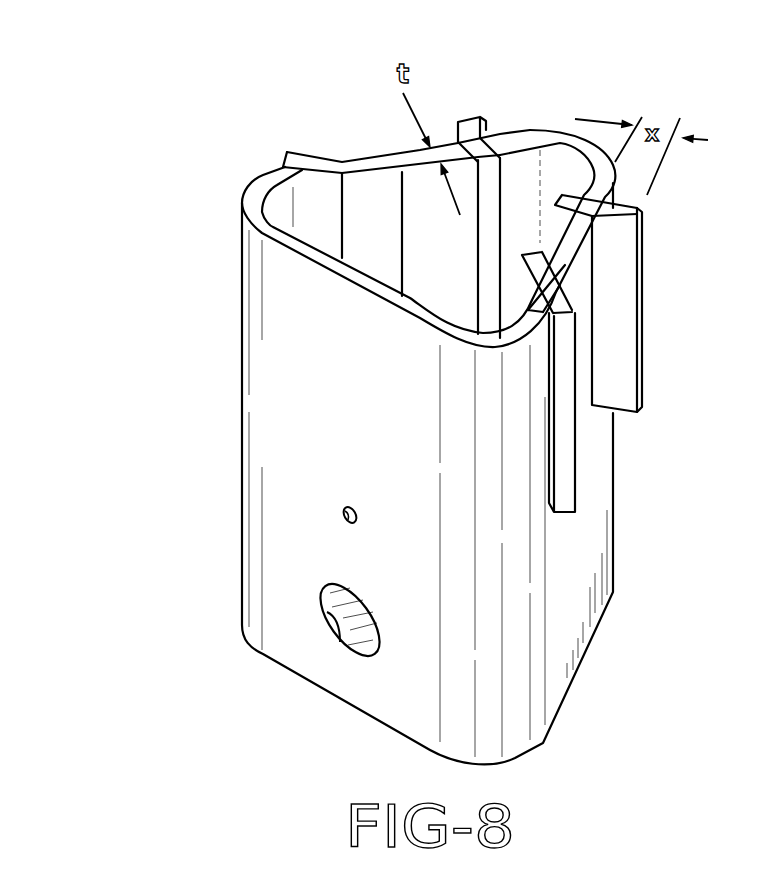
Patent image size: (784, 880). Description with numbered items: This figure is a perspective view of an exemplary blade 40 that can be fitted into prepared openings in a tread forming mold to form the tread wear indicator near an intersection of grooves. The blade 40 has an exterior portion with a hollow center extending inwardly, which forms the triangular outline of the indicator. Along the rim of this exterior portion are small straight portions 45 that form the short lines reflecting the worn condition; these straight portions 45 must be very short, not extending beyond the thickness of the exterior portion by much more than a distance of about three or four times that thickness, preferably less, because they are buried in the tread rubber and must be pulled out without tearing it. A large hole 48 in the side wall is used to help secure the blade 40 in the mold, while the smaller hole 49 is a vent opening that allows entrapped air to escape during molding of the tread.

The blade 40 is at (240, 384).
The small straight portions 45 is at (614, 318).
The large hole 48 is at (341, 638).
The smaller hole 49 is at (345, 522).